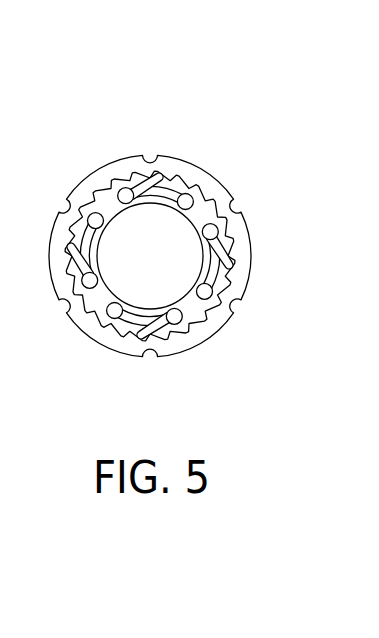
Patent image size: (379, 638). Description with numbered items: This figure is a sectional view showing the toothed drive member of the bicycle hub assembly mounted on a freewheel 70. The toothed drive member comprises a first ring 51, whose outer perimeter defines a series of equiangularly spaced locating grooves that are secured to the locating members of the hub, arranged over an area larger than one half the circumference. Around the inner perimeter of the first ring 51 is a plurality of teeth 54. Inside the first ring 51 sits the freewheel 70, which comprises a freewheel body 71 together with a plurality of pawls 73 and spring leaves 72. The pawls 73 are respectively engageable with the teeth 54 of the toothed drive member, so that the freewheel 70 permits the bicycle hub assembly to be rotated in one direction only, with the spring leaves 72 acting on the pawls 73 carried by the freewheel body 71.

The first ring 51 is at (255, 265).
The teeth 54 is at (207, 318).
The freewheel 70 is at (98, 75).
The freewheel body 71 is at (198, 203).
The spring leaves 72 is at (167, 188).
The pawls 73 is at (137, 187).